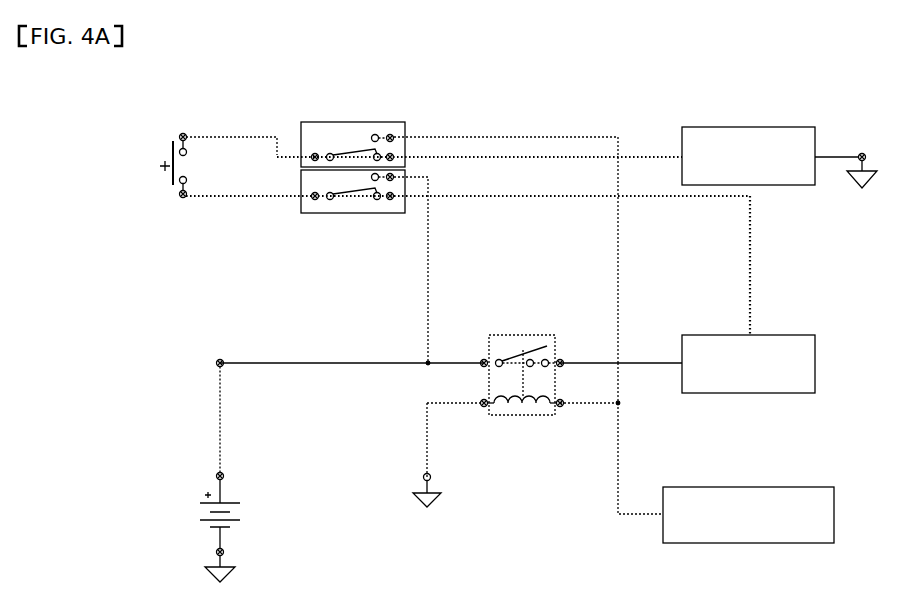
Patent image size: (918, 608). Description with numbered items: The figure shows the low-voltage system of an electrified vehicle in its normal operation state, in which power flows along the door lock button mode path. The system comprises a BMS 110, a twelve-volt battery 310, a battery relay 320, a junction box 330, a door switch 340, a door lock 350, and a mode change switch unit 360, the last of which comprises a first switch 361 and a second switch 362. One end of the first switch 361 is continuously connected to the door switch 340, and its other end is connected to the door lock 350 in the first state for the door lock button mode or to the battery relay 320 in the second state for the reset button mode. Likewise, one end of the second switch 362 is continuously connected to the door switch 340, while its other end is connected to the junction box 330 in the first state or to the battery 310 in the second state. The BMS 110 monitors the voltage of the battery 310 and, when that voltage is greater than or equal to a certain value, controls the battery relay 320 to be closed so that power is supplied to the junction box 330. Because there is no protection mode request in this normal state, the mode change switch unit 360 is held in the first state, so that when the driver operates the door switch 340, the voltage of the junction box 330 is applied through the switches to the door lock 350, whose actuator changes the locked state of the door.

The BMS 110 is at (805, 543).
The 12V battery 310 is at (200, 503).
The battery relay 320 is at (523, 415).
The junction box 330 is at (775, 393).
The door switch 340 is at (165, 168).
The door lock 350 is at (800, 185).
The mode change switch unit 360 is at (300, 193).
The first switch 361 is at (300, 166).
The second switch 362 is at (330, 214).